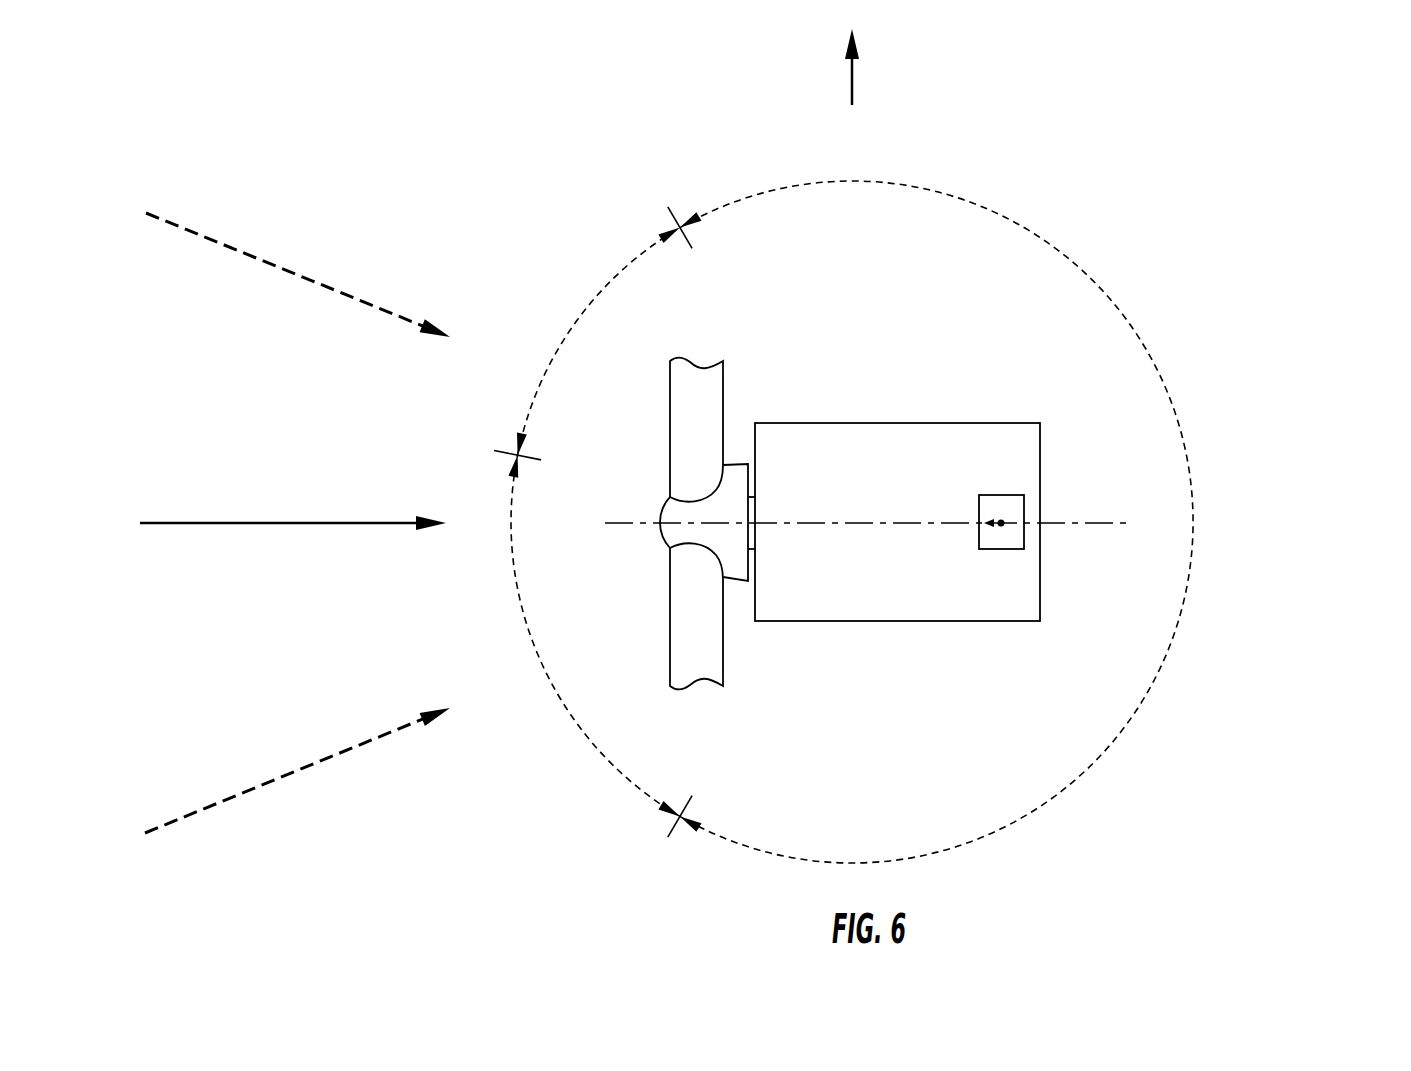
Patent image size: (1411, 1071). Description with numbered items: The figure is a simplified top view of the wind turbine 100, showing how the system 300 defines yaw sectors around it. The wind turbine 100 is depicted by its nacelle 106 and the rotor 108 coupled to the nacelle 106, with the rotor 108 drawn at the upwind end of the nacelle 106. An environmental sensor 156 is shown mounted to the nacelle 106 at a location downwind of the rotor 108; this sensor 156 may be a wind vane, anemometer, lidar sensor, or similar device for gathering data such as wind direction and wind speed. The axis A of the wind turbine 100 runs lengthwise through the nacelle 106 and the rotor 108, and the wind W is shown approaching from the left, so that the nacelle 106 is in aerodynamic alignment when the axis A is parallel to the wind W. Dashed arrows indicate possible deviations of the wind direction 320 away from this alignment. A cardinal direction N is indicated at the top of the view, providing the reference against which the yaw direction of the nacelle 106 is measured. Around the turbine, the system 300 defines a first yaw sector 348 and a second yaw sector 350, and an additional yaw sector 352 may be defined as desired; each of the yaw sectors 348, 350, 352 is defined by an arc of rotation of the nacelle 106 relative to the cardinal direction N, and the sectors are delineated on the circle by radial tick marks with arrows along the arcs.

The wind turbine 100 is at (1000, 403).
The nacelle 106 is at (1019, 431).
The rotor 108 is at (640, 490).
The environmental sensor 156 is at (1016, 505).
The system 300 is at (941, 454).
The wind direction 320 is at (345, 296).
The first yaw sector 348 is at (556, 692).
The second yaw sector 350 is at (585, 307).
The yaw sector 352 is at (1078, 778).
The cardinal direction N is at (853, 76).
The wind W is at (270, 524).
The axis A is at (1070, 525).